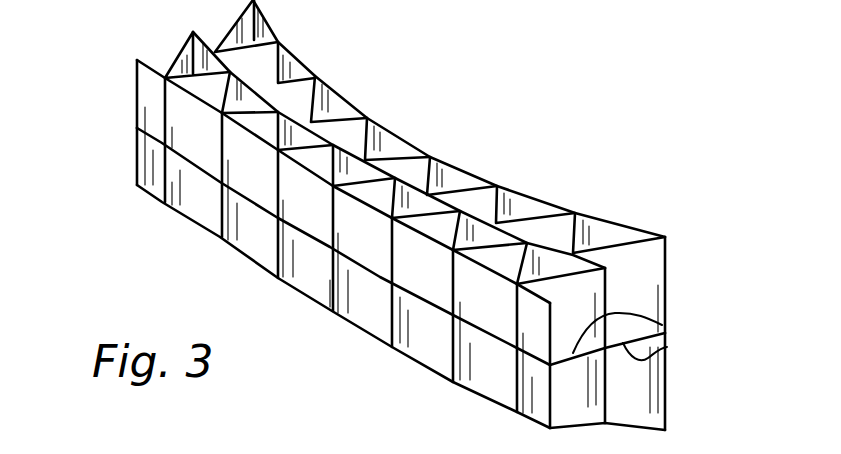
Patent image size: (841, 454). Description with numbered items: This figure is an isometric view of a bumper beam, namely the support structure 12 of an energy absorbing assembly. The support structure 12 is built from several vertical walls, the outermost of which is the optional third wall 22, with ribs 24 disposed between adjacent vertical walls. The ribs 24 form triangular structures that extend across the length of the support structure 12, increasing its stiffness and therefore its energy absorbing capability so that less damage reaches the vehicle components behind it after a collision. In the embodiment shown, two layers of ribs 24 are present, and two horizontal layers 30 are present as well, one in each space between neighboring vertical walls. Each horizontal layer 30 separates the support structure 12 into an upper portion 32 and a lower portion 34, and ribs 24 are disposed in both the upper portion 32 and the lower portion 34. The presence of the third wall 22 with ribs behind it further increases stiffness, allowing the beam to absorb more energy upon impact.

The support structure 12 is at (465, 126).
The third wall 22 is at (523, 193).
The ribs 24 is at (347, 108).
The horizontal layer 30 is at (667, 347).
The upper portion 32 is at (137, 88).
The lower portion 34 is at (137, 152).